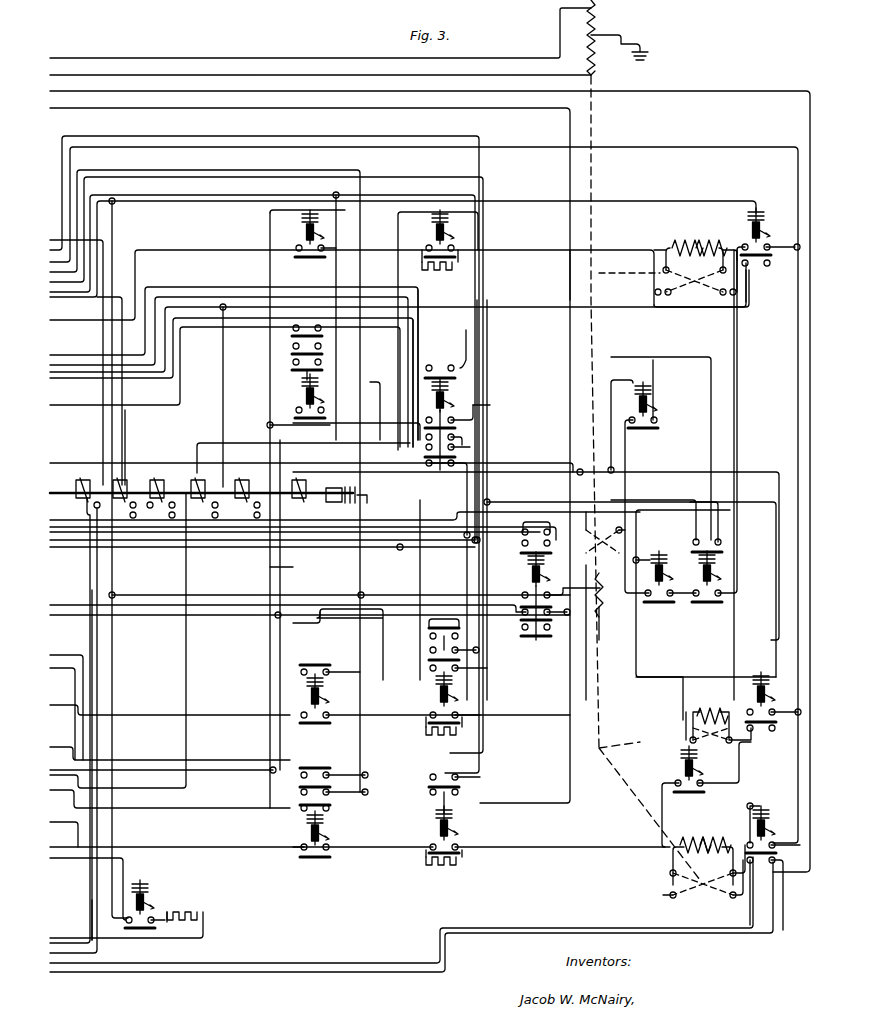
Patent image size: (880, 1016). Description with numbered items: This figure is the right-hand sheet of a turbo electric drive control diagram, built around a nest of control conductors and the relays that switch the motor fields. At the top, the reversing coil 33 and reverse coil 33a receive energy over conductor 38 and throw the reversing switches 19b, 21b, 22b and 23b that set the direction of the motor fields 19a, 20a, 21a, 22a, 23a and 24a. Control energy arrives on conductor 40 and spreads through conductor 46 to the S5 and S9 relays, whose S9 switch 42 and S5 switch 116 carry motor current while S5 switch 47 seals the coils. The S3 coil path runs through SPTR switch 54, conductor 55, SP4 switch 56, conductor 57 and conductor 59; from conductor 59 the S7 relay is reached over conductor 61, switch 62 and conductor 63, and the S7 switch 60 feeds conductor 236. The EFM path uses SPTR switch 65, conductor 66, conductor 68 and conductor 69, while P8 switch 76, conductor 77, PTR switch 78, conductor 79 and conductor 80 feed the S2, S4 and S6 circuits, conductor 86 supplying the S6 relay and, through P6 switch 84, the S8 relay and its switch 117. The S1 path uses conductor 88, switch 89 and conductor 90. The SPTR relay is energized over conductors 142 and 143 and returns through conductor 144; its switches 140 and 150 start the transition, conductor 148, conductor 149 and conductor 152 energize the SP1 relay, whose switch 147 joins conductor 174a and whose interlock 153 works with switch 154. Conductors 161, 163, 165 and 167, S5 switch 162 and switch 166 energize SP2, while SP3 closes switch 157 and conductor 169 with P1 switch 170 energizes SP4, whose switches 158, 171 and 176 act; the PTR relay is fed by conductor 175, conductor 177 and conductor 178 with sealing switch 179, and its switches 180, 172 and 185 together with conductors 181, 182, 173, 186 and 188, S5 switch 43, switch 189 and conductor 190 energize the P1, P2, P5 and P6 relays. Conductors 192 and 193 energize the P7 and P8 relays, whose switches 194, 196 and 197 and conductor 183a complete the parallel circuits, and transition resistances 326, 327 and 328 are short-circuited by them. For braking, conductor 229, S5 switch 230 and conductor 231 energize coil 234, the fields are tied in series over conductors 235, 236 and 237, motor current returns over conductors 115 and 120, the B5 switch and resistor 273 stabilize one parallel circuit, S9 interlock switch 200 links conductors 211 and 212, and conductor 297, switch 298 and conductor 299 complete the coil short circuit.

The motor field reversing switch coil 33 is at (596, 20).
The reverse coil 33a is at (598, 72).
The conductor 235 is at (708, 91).
The conductor 120 is at (710, 147).
The conductor 40 is at (216, 136).
The conductor 46 is at (412, 177).
The conductor 142 is at (236, 198).
The conductor 165 is at (112, 218).
The conductor 144 is at (234, 363).
The conductor 148 is at (95, 375).
The conductor 149 is at (86, 404).
The conductor 231 is at (104, 440).
The conductor 167 is at (126, 424).
The conductor 61 is at (223, 382).
The conductor 88 is at (200, 443).
The switch 298 is at (201, 482).
The switch 166 is at (124, 480).
The switch 189 is at (160, 480).
The switch 89 is at (200, 480).
The switch 62 is at (240, 480).
The PTR switch 185 is at (496, 444).
The coil 234 is at (355, 493).
The conductor 188 is at (66, 530).
The conductor 190 is at (72, 536).
The conductor 229 is at (178, 540).
The conductor 193 is at (208, 547).
The conductor 192 is at (314, 533).
The conductor 299 is at (94, 590).
The conductor 115 is at (140, 594).
The conductor 80 is at (210, 615).
The conductor 152 is at (64, 654).
The conductor 90 is at (188, 666).
The conductor 79 is at (311, 461).
The conductor 86 is at (580, 472).
The conductor 63 is at (546, 484).
The conductor 68 is at (644, 500).
The conductor 177 is at (478, 490).
The PTR switch 78 is at (434, 468).
The conductor 173 is at (420, 568).
The conductor 77 is at (466, 580).
The conductor 181 is at (334, 424).
The SPTR switch 140 is at (298, 418).
The conductor 182 is at (266, 352).
The conductor 143 is at (336, 276).
The transition resistance 326 is at (444, 272).
The conductor 237 is at (570, 270).
The SPTR switch 150 is at (320, 330).
The SPTR switch 54 is at (320, 348).
The SPTR switch 65 is at (312, 378).
The conductor 55 is at (383, 407).
The conductor 175 is at (412, 326).
The conductor 178 is at (420, 326).
The PTR switch 179 is at (464, 345).
The PTR switch 180 is at (435, 410).
The PTR switch 172 is at (456, 437).
The conductor 69 is at (480, 405).
The S5 switch 230 is at (524, 531).
The S5 switch 43 is at (549, 533).
The S5 switch 116 is at (524, 594).
The S5 switch 47 is at (555, 612).
The S5 switch 162 is at (524, 628).
The SP4 switch 56 is at (438, 629).
The SP4 switch 176 is at (432, 650).
The SP4 switch 171 is at (432, 668).
The SP4 switch 158 is at (462, 714).
The transition resistance 328 is at (465, 738).
The conductor 163 is at (356, 612).
The SP1 interlock switch 153 is at (328, 674).
The SP1 switch 147 is at (328, 717).
The switch 154 is at (328, 776).
The P1 switch 170 is at (328, 811).
The P1 switch 196 is at (328, 850).
The P8 switch 194 is at (447, 773).
The P8 switch 76 is at (456, 794).
The P8 switch 197 is at (460, 846).
The transition resistance 327 is at (450, 870).
The conductor 174a is at (220, 715).
The conductor 161 is at (218, 760).
The conductor 183a is at (248, 771).
The conductor 169 is at (202, 808).
The resistor 273 is at (180, 912).
The conductor 297 is at (96, 900).
The conductor 211 is at (276, 962).
The conductor 212 is at (374, 973).
The conductor 59 is at (600, 312).
The conductor 66 is at (596, 360).
The SP3 switch 157 is at (746, 246).
The conductor 38 is at (755, 281).
The motor field 19a is at (680, 244).
The motor field 20a is at (708, 244).
The reversing switch 19b is at (696, 284).
The conductor 236 is at (738, 420).
The S6 switch 84 is at (648, 420).
The conductor 57 is at (600, 648).
The S7 switch 60 is at (720, 596).
The reversing switch 21b is at (607, 531).
The motor field 21a is at (602, 584).
The conductor 186 is at (600, 680).
The motor field 22a is at (710, 708).
The reversing switch 22b is at (684, 733).
The S8 switch 117 is at (700, 782).
The S9 switch 42 is at (776, 849).
The S9 interlock switch 200 is at (740, 862).
The motor field 23a is at (688, 842).
The motor field 24a is at (728, 842).
The reversing switch 23b is at (704, 898).
The P1 relay P1 is at (306, 834).
The P2 relay P2 is at (307, 233).
The P5 relay P5 is at (704, 593).
The P6 relay P6 is at (773, 696).
The P7 relay P7 is at (438, 330).
The P8 relay P8 is at (431, 829).
The S5 relay S5 is at (524, 592).
The S6 relay S6 is at (659, 448).
The S7 relay S7 is at (700, 576).
The S8 relay S8 is at (700, 794).
The S9 relay S9 is at (767, 833).
The SP1 relay SP1 is at (315, 681).
The SP3 relay SP3 is at (769, 221).
The SP4 relay SP4 is at (438, 697).
The SPTR relay SPTR is at (331, 396).
The PTR relay PTR is at (439, 407).
The B5 switch B5 is at (105, 893).
The resistor R is at (568, 67).